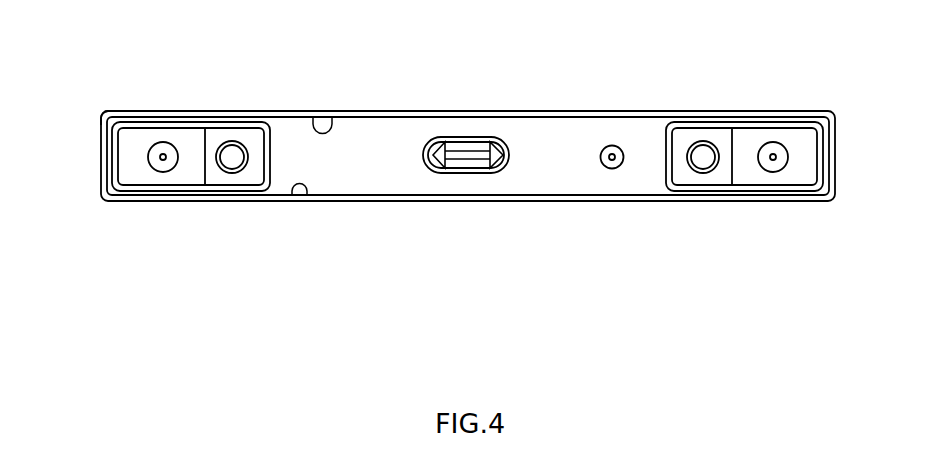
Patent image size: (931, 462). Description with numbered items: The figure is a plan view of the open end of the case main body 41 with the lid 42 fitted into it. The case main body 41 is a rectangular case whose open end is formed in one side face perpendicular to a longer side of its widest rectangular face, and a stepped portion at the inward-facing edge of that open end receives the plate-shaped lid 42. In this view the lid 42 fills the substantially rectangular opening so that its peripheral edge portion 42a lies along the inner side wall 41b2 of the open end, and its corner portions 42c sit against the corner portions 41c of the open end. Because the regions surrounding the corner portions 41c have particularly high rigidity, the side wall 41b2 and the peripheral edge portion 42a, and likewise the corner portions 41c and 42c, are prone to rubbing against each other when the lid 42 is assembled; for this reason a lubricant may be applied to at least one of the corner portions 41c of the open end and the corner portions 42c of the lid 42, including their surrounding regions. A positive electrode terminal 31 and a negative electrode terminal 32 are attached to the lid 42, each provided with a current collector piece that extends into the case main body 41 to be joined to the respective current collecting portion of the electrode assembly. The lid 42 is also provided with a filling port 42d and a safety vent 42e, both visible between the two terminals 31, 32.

The case main body 41 is at (527, 98).
The corner portion of the open end 41c is at (121, 133).
The inner side wall of the open end 41b2 is at (331, 117).
The lid 42 is at (385, 163).
The peripheral edge portion of the lid 42a is at (360, 195).
The corner portion of the lid 42c is at (100, 112).
The filling port 42d is at (623, 168).
The safety vent 42e is at (507, 172).
The positive electrode terminal 31 is at (182, 170).
The negative electrode terminal 32 is at (788, 170).